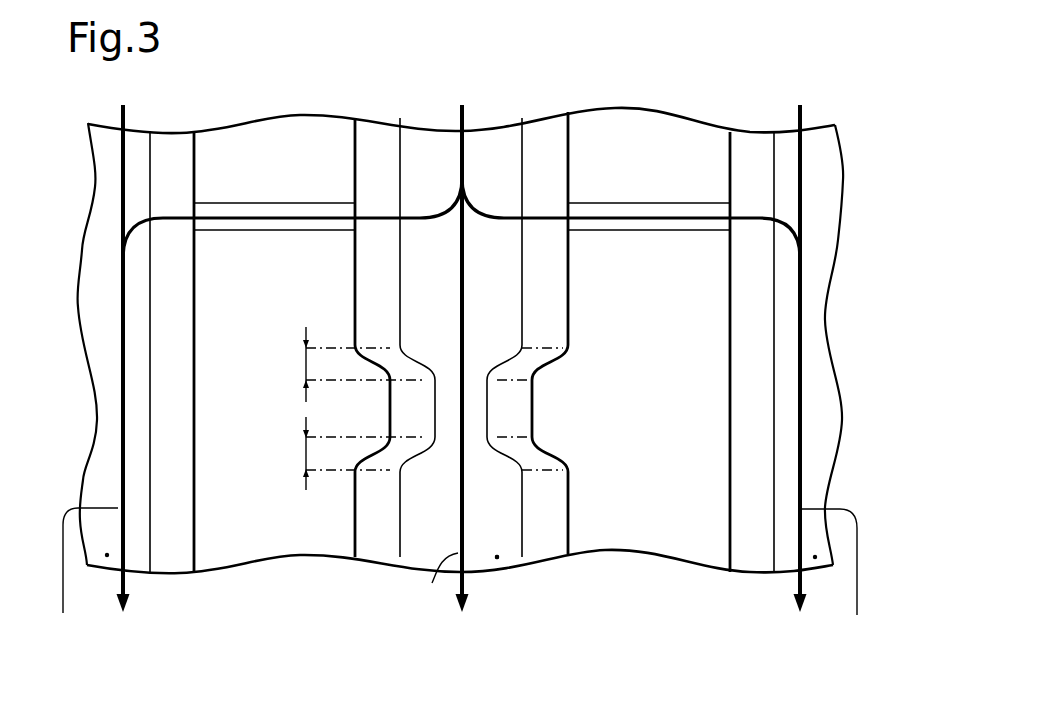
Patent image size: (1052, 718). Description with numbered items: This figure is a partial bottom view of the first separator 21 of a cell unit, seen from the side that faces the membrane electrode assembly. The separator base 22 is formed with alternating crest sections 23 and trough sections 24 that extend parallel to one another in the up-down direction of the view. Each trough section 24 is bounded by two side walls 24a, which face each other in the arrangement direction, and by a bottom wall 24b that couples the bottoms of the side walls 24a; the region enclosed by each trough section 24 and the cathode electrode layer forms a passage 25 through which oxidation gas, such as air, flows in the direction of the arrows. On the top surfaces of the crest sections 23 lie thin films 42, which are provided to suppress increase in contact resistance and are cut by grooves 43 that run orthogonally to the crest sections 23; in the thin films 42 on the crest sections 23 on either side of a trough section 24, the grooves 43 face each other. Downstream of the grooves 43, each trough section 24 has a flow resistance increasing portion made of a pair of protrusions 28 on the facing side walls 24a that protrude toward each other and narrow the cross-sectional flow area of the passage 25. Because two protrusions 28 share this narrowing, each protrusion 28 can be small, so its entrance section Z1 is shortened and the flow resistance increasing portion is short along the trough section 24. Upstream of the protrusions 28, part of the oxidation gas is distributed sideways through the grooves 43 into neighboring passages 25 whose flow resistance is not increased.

The first separator 21 is at (692, 590).
The separator base 22 is at (498, 596).
The crest sections 23 is at (193, 230).
The trough sections 24 is at (568, 80).
The side walls 24a is at (175, 138).
The bottom wall 24b is at (105, 132).
The passage 25 is at (107, 556).
The protrusions 28 is at (404, 456).
The thin films 42 is at (277, 118).
The grooves 43 is at (265, 231).
The entrance section Z1 is at (305, 366).